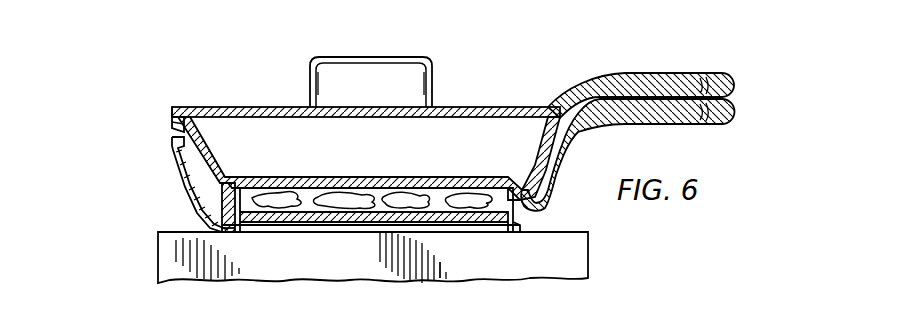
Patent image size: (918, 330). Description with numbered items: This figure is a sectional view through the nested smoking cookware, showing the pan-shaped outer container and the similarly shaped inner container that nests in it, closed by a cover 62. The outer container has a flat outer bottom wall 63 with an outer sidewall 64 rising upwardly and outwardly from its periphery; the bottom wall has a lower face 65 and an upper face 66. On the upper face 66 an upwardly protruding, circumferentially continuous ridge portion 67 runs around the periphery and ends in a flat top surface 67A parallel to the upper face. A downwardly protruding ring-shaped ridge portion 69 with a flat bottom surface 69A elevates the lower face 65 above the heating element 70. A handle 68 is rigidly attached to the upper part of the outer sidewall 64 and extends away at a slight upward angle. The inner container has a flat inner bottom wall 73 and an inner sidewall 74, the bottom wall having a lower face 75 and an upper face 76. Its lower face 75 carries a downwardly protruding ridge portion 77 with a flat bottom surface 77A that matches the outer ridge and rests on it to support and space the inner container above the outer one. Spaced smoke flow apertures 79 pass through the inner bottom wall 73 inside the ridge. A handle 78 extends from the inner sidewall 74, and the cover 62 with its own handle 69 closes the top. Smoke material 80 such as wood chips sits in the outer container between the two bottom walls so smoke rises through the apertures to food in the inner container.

The cover 62 is at (252, 107).
The outer bottom wall 63 is at (436, 282).
The outer sidewall 64 is at (183, 162).
The lower face 65 is at (383, 235).
The upper face 66 is at (423, 205).
The ridge portion 67 is at (546, 194).
The flat top surface 67A is at (527, 218).
The handle 68 is at (636, 127).
The ridge portion 69 is at (413, 57).
The flat bottom surface 69A is at (233, 232).
The heating element 70 is at (568, 255).
The inner bottom wall 73 is at (266, 177).
The inner sidewall 74 is at (205, 115).
The lower face 75 is at (323, 192).
The upper face 76 is at (360, 177).
The ridge portion 77 is at (213, 198).
The flat bottom surface 77A is at (220, 227).
The handle 78 is at (633, 80).
The smoke flow apertures 79 is at (287, 183).
The smoke material 80 is at (278, 204).